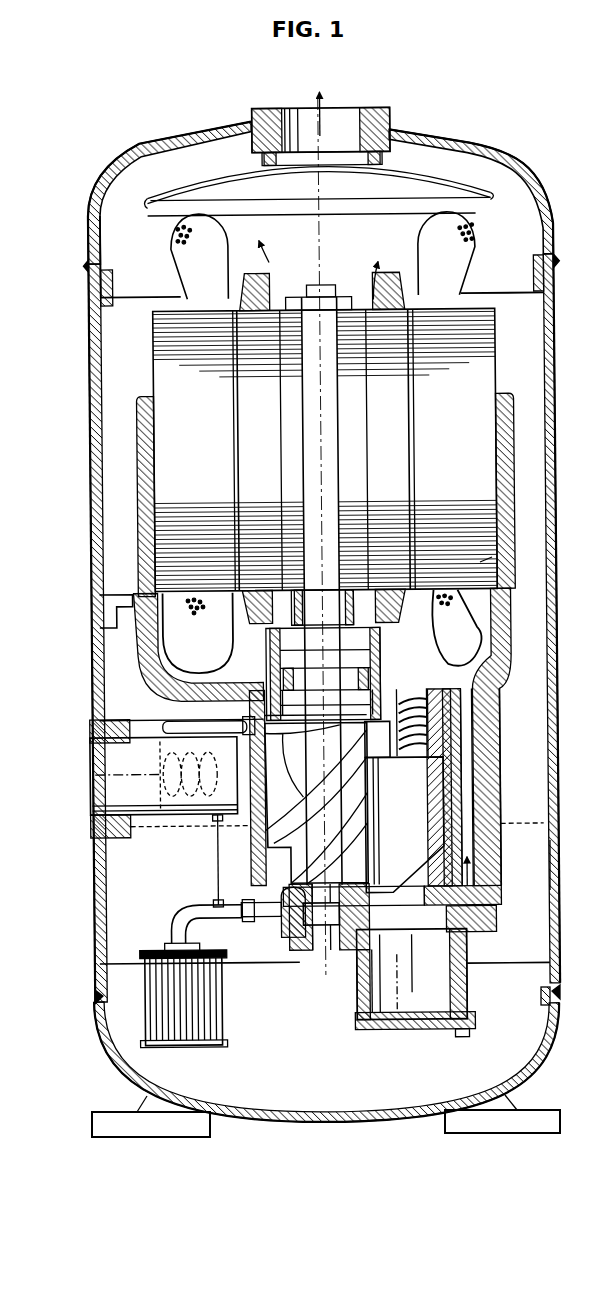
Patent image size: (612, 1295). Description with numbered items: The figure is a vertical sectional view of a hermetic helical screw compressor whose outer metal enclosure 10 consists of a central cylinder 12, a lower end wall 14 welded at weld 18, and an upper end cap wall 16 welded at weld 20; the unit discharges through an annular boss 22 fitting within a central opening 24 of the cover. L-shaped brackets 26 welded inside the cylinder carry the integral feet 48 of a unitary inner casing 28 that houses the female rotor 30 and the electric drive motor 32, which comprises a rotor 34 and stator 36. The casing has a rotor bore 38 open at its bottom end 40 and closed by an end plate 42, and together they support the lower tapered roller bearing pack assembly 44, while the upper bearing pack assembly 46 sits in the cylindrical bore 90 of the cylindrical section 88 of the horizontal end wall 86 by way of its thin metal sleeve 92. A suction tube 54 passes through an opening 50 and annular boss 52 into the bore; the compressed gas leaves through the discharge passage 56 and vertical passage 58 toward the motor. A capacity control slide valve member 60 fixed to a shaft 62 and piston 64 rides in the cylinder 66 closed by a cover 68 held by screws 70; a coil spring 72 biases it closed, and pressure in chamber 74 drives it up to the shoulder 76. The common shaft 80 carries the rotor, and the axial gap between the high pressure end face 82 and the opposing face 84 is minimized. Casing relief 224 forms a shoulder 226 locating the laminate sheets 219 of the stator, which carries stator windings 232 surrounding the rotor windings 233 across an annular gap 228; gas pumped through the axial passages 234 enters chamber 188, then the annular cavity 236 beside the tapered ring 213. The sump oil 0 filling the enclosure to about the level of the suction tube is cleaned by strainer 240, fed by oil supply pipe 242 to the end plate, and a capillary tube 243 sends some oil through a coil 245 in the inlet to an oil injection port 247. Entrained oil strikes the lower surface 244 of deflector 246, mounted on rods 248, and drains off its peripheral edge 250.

The housing wall 0 is at (533, 868).
The outer metal enclosure 10 is at (557, 478).
The central cylinder 12 is at (556, 676).
The lower end wall 14 is at (548, 1066).
The upper end cap wall 16 is at (516, 166).
The weld 18 is at (562, 994).
The weld 20 is at (558, 265).
The annular boss 22 is at (392, 112).
The central opening 24 is at (386, 148).
The L-shaped brackets 26 is at (102, 615).
The inner casing 28 is at (500, 755).
The female rotor 30 is at (329, 843).
The electric drive motor 32 is at (474, 274).
The rotor 34 is at (268, 300).
The stator 36 is at (478, 397).
The rotor bore 38 is at (265, 758).
The bottom end of bore 40 is at (330, 883).
The casing end plate 42 is at (493, 903).
The lower tapered roller bearing pack assembly 44 is at (319, 953).
The upper tapered roller bearing pack assembly 46 is at (380, 652).
The integral feet 48 is at (114, 590).
The opening 50 is at (106, 722).
The annular boss 52 is at (165, 723).
The suction tube 54 is at (197, 858).
The compressor discharge passage 56 is at (483, 931).
The vertical passage 58 is at (473, 802).
The capacity control slide valve member 60 is at (433, 839).
The shaft 62 is at (423, 901).
The piston 64 is at (410, 950).
The slide valve drive motor cylinder 66 is at (360, 1003).
The cover 68 is at (383, 1024).
The screws 70 is at (467, 1001).
The coil spring 72 is at (406, 796).
The chamber 74 is at (398, 1005).
The shoulder 76 is at (384, 725).
The shaft 80 is at (331, 478).
The high pressure end face 82 is at (373, 881).
The opposing face 84 is at (270, 941).
The end wall 86 is at (430, 690).
The cylindrical section 88 is at (244, 657).
The cylindrical bore 90 is at (268, 684).
The thin metal sleeve 92 is at (282, 647).
The chamber 188 is at (412, 628).
The tapered ring 213 is at (338, 592).
The laminate sheets 219 is at (492, 557).
The internal relief 224 is at (497, 548).
The shoulder 226 is at (168, 597).
The annular gap 228 is at (235, 413).
The stator windings 232 is at (228, 253).
The rotor windings 233 is at (395, 288).
The axial passages 234 is at (281, 450).
The annular cavity 236 is at (337, 584).
The strainer 240 is at (205, 1023).
The oil supply pipe 242 is at (178, 923).
The capillary tube 243 is at (217, 886).
The lower surface 244 is at (433, 186).
The coil 245 is at (160, 776).
The deflector 246 is at (486, 190).
The oil injection port 247 is at (281, 731).
The rods 248 is at (262, 159).
The peripheral edge 250 is at (148, 206).